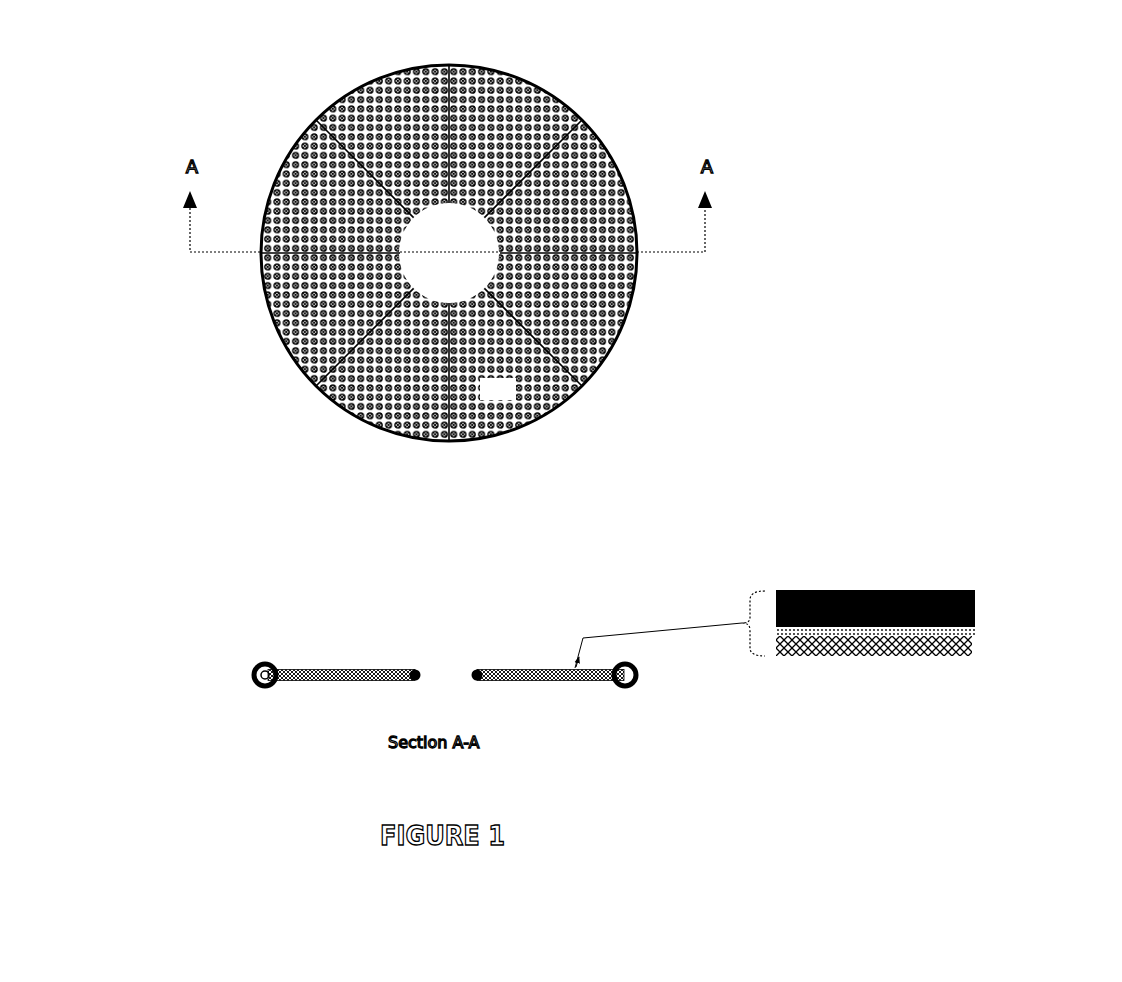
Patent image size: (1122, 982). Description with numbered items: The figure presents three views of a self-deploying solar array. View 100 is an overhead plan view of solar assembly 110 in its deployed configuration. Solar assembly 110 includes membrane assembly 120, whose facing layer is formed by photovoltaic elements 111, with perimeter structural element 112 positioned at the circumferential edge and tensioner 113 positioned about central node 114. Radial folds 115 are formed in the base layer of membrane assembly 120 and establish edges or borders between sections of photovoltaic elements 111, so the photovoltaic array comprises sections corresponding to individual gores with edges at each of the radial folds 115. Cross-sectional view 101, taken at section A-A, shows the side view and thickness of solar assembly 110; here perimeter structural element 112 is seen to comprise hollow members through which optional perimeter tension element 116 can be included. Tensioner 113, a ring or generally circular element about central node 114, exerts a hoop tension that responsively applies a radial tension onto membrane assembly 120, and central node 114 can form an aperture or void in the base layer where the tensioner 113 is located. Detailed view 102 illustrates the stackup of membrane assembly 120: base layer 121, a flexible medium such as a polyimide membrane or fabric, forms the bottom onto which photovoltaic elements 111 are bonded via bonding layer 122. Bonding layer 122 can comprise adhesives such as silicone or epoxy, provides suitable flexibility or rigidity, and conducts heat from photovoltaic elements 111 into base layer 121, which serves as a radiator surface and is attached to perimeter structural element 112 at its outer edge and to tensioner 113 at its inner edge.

The view 100 is at (272, 78).
The cross-sectional view 101 is at (306, 624).
The detailed view 102 is at (832, 566).
The solar assembly 110 is at (256, 323).
The photovoltaic elements 111 is at (602, 322).
The perimeter structural element 112 is at (559, 411).
The tensioner 113 is at (478, 212).
The central node 114 is at (453, 278).
The radial folds 115 is at (450, 63).
The perimeter tension element 116 is at (257, 677).
The membrane assembly 120 is at (510, 397).
The base layer 121 is at (965, 648).
The bonding layer 122 is at (975, 632).